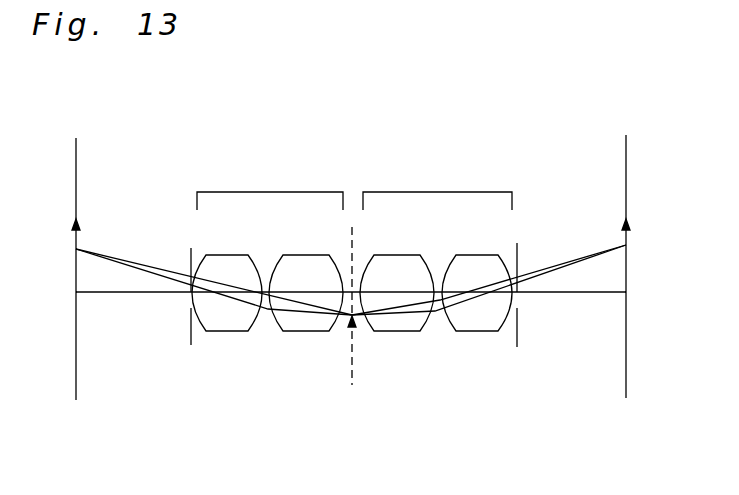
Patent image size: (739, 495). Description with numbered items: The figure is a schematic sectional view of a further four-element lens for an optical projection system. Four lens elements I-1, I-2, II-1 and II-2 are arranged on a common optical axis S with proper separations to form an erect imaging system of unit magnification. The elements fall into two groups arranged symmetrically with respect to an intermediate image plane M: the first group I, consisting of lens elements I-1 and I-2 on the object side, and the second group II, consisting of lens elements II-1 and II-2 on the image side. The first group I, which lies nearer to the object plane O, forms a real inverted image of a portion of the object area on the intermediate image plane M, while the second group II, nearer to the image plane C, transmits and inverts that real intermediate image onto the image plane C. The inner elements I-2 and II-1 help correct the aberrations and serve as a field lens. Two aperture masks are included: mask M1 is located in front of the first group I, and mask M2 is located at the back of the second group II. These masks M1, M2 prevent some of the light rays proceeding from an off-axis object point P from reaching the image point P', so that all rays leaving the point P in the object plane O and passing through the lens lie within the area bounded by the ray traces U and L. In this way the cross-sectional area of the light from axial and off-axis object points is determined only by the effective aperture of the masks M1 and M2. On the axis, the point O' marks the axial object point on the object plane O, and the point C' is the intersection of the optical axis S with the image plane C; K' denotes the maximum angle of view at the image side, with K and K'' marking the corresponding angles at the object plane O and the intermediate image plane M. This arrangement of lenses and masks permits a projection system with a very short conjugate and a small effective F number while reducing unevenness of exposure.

The object plane O is at (113, 244).
The object height arrow K is at (110, 187).
The ray trace L is at (150, 266).
The ray trace U is at (150, 268).
The off-axis object point P is at (64, 253).
The axial object point O' is at (65, 296).
The optical axis S is at (143, 293).
The aperture mask M1 is at (190, 248).
The aperture mask M2 is at (517, 243).
The first lens element group I is at (270, 186).
The lens element I-1 is at (232, 262).
The lens element I-2 is at (305, 262).
The second lens element group II is at (437, 186).
The lens element II-1 is at (396, 262).
The lens element II-2 is at (480, 262).
The intermediate image plane M is at (353, 378).
The intermediate image arrow K'' is at (322, 359).
The image plane C is at (596, 243).
The maximum angle of view K' is at (600, 192).
The image point P' is at (502, 269).
The point of intersection C' is at (640, 291).